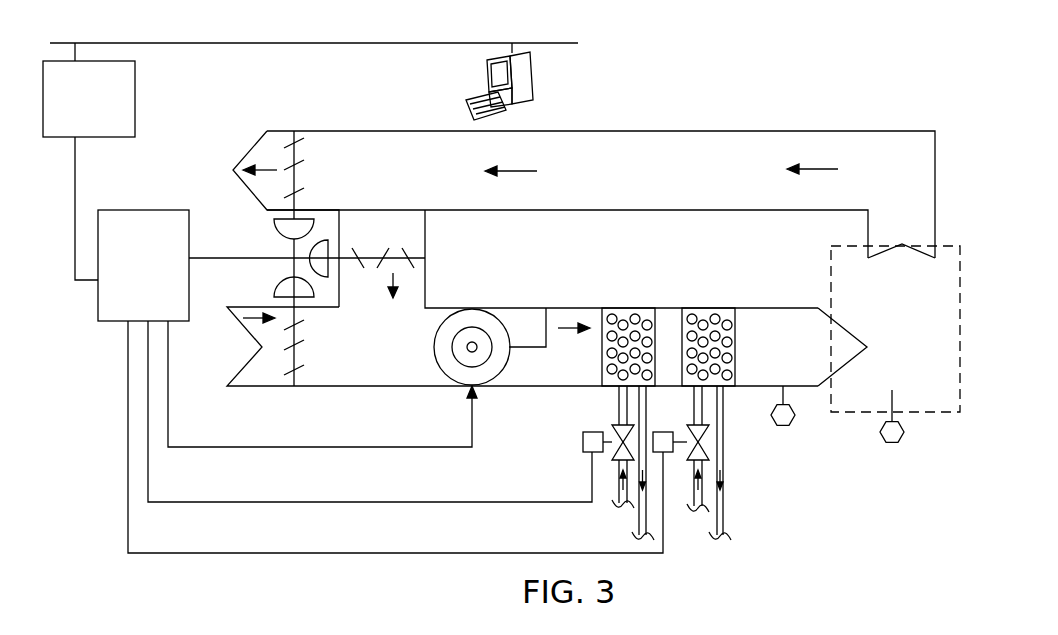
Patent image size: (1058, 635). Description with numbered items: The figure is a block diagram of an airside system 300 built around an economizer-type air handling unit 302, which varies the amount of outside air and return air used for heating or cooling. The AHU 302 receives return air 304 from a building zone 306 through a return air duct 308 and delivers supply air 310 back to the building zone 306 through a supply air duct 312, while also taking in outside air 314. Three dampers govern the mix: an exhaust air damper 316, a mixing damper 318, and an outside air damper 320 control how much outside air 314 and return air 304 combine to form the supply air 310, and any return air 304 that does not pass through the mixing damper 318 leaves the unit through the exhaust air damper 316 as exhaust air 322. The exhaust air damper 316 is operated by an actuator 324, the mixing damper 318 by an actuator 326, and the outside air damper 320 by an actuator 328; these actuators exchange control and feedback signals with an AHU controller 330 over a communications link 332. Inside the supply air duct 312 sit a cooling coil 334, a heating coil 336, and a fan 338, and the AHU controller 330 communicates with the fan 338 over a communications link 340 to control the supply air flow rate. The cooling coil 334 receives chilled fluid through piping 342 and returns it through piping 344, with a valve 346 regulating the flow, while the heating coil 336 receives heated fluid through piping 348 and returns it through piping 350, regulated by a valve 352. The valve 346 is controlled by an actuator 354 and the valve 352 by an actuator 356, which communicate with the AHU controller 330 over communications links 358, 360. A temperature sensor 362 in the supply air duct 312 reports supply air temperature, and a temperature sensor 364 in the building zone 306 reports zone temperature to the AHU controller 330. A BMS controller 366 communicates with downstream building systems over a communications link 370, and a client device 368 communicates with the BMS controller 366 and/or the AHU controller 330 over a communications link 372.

The airside system 300 is at (310, 27).
The economizer-type air handling unit 302 is at (750, 95).
The return air 304 is at (905, 187).
The building zone 306 is at (941, 400).
The return air duct 308 is at (833, 130).
The supply air 310 is at (797, 322).
The supply air duct 312 is at (761, 308).
The outside air 314 is at (217, 387).
The exhaust air damper 316 is at (297, 158).
The mixing damper 318 is at (424, 256).
The outside air damper 320 is at (300, 352).
The exhaust air 322 is at (216, 137).
The actuator 324 is at (310, 226).
The actuator 326 is at (326, 248).
The actuator 328 is at (278, 294).
The AHU controller 330 is at (130, 210).
The communications link 332 is at (222, 258).
The cooling coil 334 is at (623, 312).
The heating coil 336 is at (703, 312).
The fan 338 is at (503, 358).
The communications link 340 is at (342, 446).
The piping 342 is at (620, 404).
The piping 344 is at (638, 525).
The valve 346 is at (618, 428).
The piping 348 is at (695, 404).
The piping 350 is at (722, 511).
The valve 352 is at (693, 428).
The actuator 354 is at (590, 450).
The actuator 356 is at (668, 452).
The communications link 358 is at (405, 501).
The communications link 360 is at (440, 552).
The temperature sensor 362 is at (783, 428).
The temperature sensor 364 is at (892, 445).
The BMS controller 366 is at (89, 99).
The client device 368 is at (527, 76).
The communications link 370 is at (75, 262).
The communications link 372 is at (227, 42).